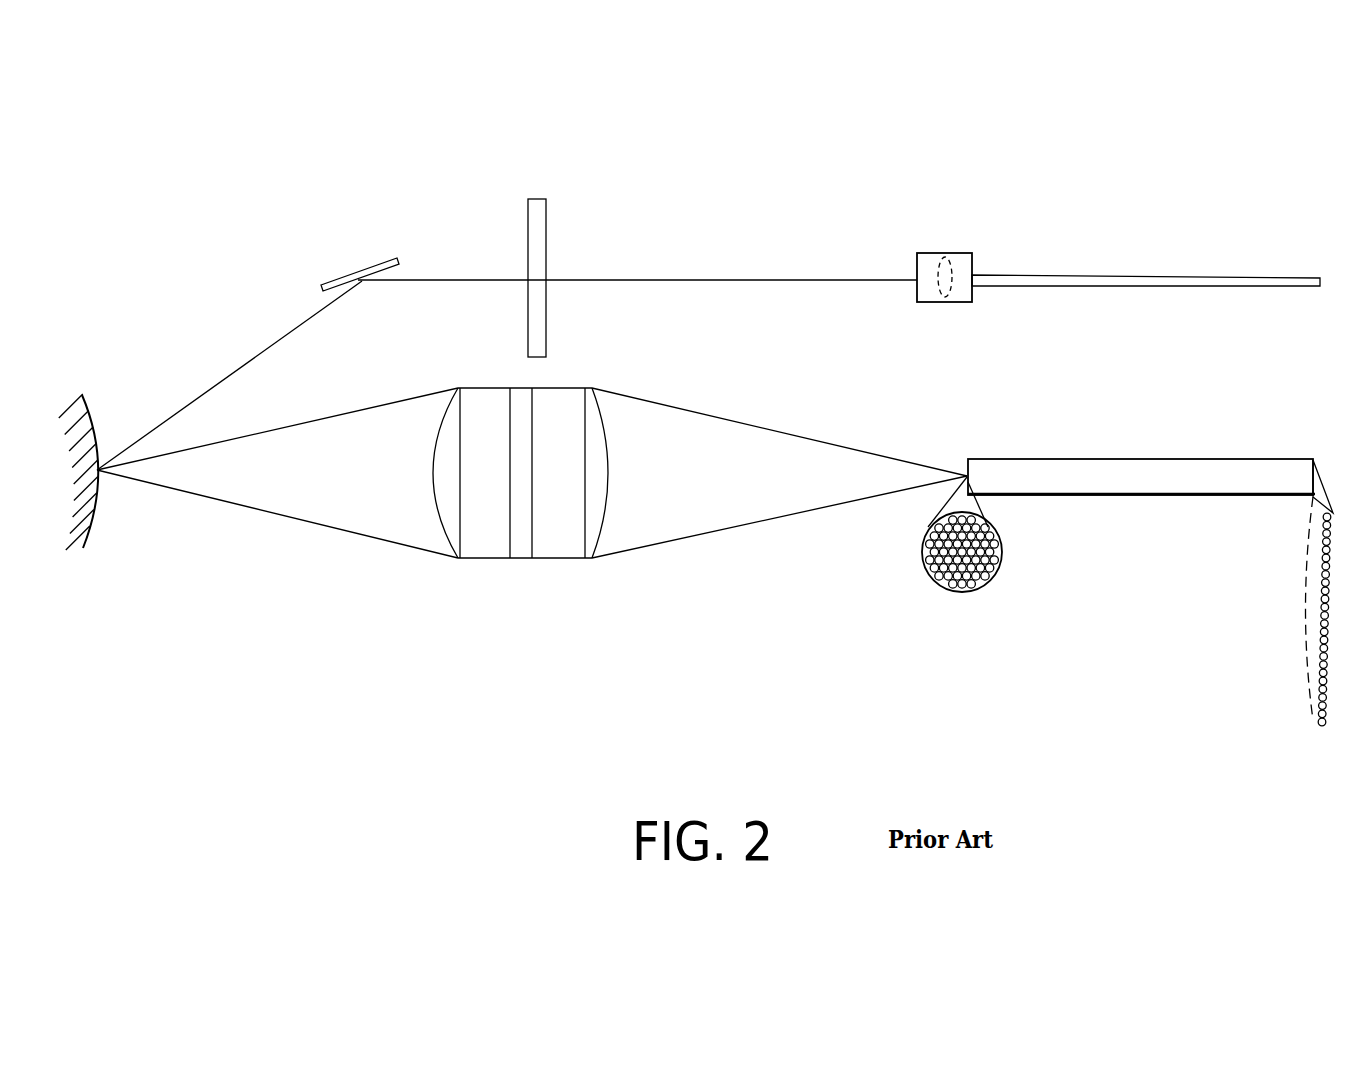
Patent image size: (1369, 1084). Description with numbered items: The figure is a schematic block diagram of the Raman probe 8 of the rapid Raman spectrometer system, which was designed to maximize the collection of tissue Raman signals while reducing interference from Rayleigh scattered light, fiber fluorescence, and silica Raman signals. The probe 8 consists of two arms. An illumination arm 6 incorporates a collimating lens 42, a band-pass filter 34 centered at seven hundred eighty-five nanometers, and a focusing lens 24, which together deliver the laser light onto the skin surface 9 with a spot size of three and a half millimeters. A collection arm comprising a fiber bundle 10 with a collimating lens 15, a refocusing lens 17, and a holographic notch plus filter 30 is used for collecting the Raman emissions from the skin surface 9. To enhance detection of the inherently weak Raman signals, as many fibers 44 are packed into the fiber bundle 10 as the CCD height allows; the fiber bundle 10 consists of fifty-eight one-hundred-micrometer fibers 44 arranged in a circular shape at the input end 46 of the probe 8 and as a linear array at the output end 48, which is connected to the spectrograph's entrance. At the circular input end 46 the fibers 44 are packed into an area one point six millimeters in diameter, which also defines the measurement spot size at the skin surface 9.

The illumination arm 6 is at (1182, 276).
The Raman probe 8 is at (750, 213).
The skin surface 9 is at (87, 406).
The fiber bundle 10 is at (1183, 459).
The collimating lens 15 is at (449, 405).
The refocusing lens 17 is at (597, 400).
The focusing lens 24 is at (338, 278).
The holographic notch plus filter 30 is at (515, 560).
The band-pass filter 34 is at (537, 199).
The collimating lens 42 is at (945, 253).
The fibers 44 is at (1000, 545).
The input end 46 is at (968, 460).
The output end 48 is at (1316, 460).